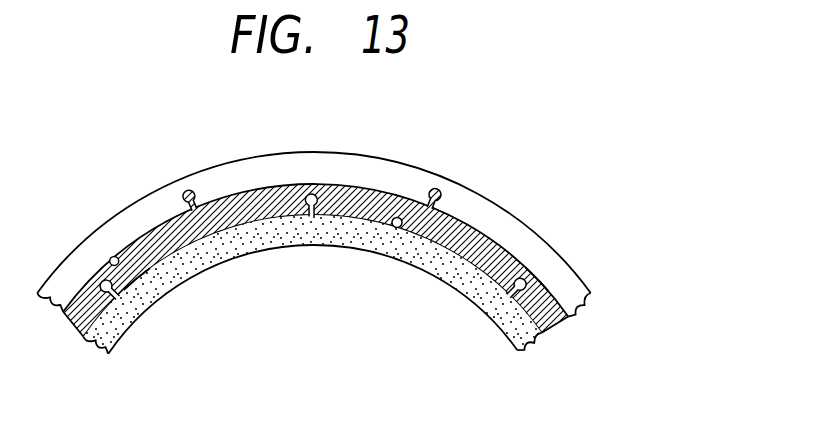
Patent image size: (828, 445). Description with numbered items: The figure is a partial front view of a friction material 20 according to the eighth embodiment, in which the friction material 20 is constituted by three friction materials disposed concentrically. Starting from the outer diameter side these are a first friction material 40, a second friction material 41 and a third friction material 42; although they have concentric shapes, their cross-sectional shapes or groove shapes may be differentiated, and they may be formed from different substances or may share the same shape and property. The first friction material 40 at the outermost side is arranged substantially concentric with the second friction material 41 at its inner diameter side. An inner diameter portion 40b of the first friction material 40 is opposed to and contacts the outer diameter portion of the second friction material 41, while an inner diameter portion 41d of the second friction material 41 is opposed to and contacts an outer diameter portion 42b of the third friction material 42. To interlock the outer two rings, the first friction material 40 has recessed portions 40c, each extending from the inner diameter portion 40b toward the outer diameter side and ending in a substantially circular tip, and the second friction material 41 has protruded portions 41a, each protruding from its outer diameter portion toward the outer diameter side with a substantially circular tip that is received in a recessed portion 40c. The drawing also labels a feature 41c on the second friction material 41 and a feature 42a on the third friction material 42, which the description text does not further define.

The friction material 20 is at (376, 244).
The first friction material 40 is at (220, 177).
The inner diameter portion 40b is at (115, 262).
The recessed portion 40c is at (443, 198).
The second friction material 41 is at (497, 252).
The protruded portion 41a is at (433, 190).
The inner peripheral surface 41c is at (330, 243).
The inner diameter portion 41d is at (148, 268).
The third friction material 42 is at (478, 293).
The anchor projection of resin layer 42a is at (307, 193).
The outer diameter portion 42b is at (394, 228).